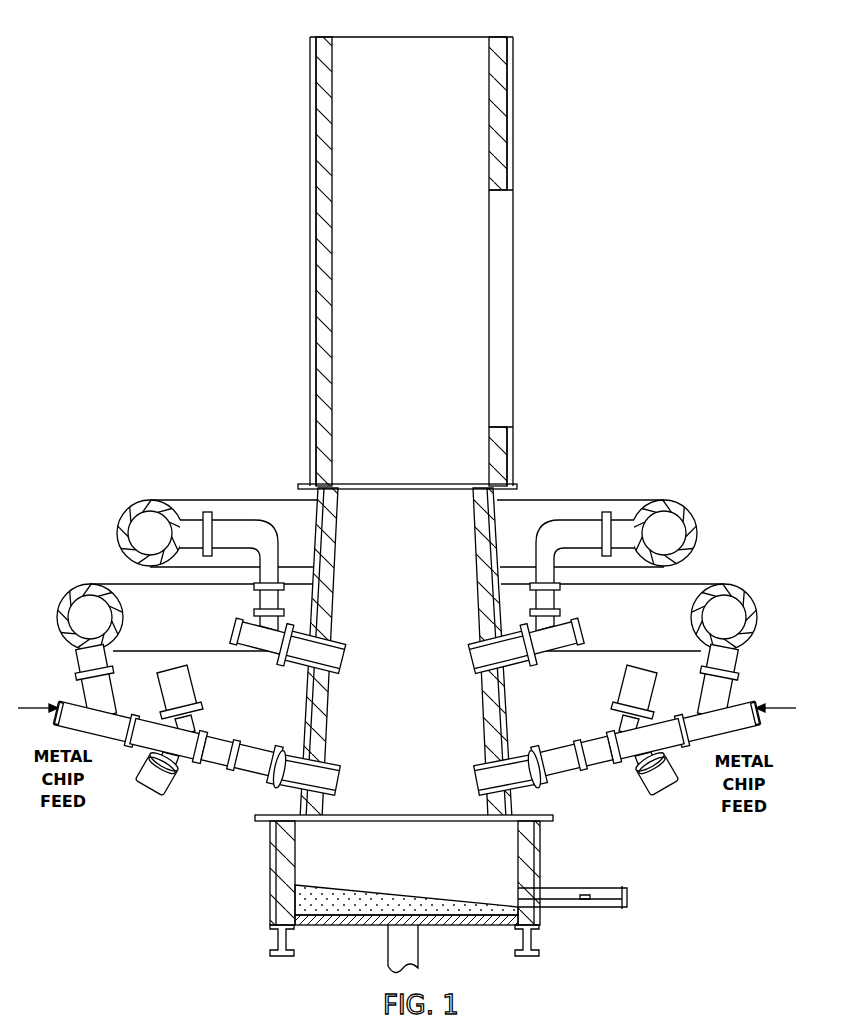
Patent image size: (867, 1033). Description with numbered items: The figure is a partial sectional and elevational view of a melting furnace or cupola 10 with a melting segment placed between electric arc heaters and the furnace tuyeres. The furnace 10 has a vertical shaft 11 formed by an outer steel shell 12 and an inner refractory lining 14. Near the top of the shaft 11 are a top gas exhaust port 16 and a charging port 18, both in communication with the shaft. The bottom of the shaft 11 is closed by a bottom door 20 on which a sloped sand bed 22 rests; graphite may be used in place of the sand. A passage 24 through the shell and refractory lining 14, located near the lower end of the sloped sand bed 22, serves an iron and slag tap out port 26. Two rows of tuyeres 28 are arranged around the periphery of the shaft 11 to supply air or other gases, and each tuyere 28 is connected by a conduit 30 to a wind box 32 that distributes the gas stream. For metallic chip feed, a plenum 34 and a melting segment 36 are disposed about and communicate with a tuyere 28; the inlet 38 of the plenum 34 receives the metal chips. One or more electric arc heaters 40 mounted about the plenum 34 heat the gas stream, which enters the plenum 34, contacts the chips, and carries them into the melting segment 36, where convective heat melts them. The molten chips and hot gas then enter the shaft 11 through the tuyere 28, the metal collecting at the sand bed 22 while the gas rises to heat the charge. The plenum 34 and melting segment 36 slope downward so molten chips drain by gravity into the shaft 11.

The melting furnace 10 is at (576, 450).
The vertical shaft 11 is at (417, 544).
The outer steel shell 12 is at (310, 221).
The inner refractory lining 14 is at (332, 126).
The top gas exhaust port 16 is at (388, 36).
The charging port 18 is at (513, 235).
The bottom door 20 is at (355, 926).
The sloped sand bed 22 is at (352, 880).
The passage 24 is at (518, 889).
The iron and slag tap out port 26 is at (595, 887).
The tuyere 28 is at (344, 663).
The conduit 30 is at (275, 532).
The wind box 32 is at (131, 503).
The plenum 34 is at (200, 761).
The melting segment 36 is at (221, 733).
The inlet 38 is at (42, 735).
The electric arc heater 40 is at (193, 688).